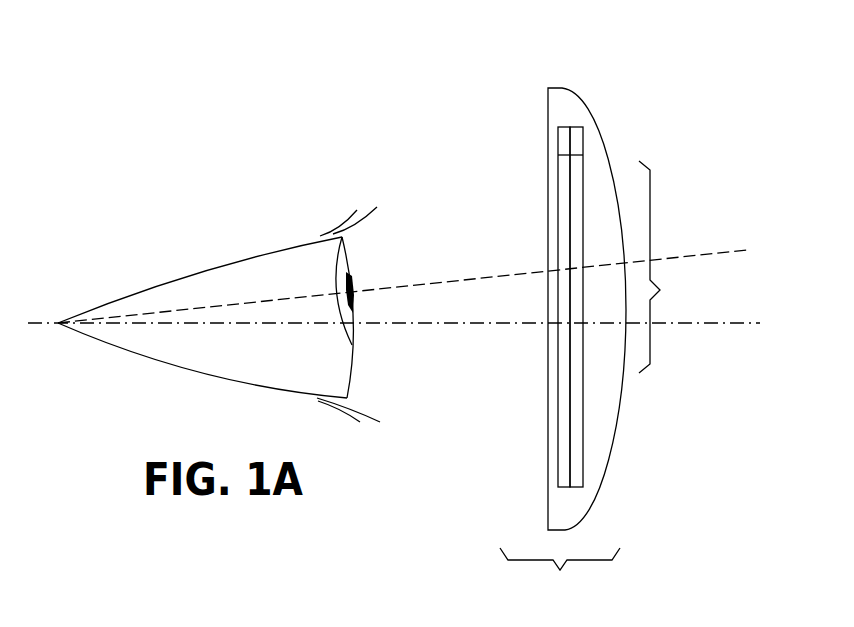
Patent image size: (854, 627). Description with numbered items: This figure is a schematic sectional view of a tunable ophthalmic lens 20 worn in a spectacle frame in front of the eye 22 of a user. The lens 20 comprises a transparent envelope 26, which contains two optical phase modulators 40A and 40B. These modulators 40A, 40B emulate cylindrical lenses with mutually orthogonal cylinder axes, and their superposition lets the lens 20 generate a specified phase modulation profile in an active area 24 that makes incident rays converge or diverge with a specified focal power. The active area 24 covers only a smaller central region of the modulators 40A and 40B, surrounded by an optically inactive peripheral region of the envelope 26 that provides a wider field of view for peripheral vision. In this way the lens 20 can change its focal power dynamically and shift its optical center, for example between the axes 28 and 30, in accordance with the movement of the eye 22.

The tunable ophthalmic lens 20 is at (560, 577).
The eye 22 is at (203, 268).
The active area 24 is at (668, 267).
The transparent envelope 26 is at (561, 88).
The axis 28 is at (717, 250).
The axis 30 is at (743, 323).
The optical phase modulator 40A is at (583, 138).
The optical phase modulator 40B is at (570, 180).